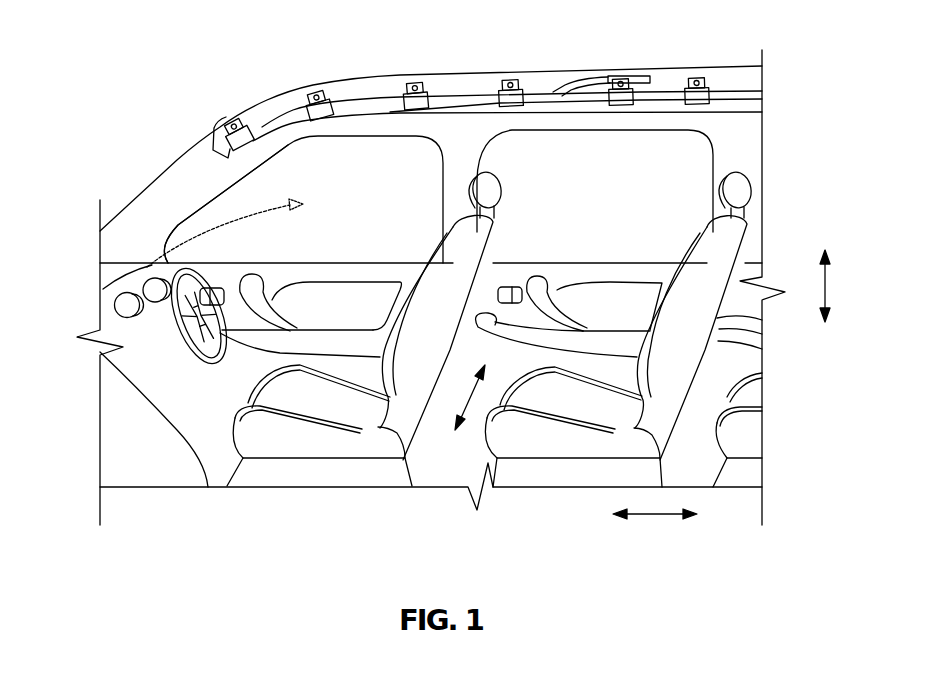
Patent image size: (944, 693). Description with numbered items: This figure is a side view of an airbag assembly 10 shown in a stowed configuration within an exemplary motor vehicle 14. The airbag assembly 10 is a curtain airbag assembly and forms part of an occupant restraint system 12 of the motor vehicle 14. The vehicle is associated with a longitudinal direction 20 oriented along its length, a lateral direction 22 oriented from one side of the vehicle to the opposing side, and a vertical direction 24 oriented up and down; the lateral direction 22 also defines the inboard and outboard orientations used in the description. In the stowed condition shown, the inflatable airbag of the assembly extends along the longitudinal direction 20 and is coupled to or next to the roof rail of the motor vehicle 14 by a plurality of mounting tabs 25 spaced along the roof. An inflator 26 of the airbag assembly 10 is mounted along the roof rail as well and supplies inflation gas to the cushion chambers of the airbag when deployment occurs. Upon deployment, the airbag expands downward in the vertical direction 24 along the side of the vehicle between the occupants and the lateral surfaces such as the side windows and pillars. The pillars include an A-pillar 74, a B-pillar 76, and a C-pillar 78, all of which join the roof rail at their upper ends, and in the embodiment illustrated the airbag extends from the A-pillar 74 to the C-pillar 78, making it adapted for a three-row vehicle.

The airbag assembly 10 is at (458, 77).
The occupant restraint system 12 is at (147, 267).
The motor vehicle 14 is at (177, 163).
The longitudinal direction 20 is at (653, 517).
The lateral direction 22 is at (474, 395).
The vertical direction 24 is at (830, 288).
The mounting tabs 25 is at (233, 120).
The inflator 26 is at (628, 75).
The A-pillar 74 is at (153, 202).
The B-pillar 76 is at (463, 173).
The C-pillar 78 is at (735, 158).